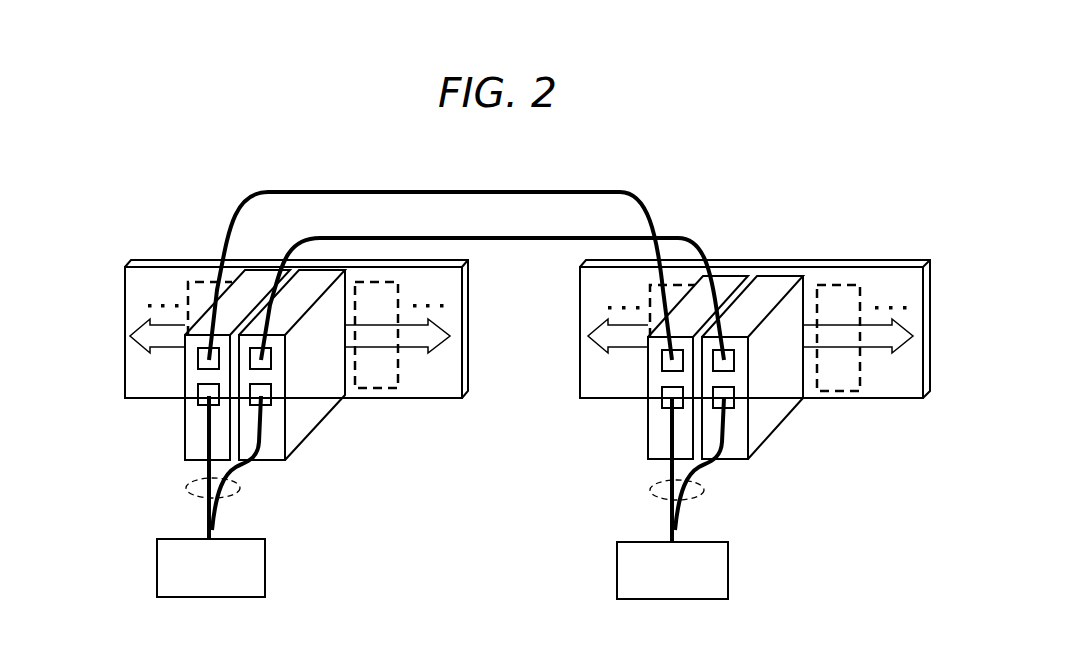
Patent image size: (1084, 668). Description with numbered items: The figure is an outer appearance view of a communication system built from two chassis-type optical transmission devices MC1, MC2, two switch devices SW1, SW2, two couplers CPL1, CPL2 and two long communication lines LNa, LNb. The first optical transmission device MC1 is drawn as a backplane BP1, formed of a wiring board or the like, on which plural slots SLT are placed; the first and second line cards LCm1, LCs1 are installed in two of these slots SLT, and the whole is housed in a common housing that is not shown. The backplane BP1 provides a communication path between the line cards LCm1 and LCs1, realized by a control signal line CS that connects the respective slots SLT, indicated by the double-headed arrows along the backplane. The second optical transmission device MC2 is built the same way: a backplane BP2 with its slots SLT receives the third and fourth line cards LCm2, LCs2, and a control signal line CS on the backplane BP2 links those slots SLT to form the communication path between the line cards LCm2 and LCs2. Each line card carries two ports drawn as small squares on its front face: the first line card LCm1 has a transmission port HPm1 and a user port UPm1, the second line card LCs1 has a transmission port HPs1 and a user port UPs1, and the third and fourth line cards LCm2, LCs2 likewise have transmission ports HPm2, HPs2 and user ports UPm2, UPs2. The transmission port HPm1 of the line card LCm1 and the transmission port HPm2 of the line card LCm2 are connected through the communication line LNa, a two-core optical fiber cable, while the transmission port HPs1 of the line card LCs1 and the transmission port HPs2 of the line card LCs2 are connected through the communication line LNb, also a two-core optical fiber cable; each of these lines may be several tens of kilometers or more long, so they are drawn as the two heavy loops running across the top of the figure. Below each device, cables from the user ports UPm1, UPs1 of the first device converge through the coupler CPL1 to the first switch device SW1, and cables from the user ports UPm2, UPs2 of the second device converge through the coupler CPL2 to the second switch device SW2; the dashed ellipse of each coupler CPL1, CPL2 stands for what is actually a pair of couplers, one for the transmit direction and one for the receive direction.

The first backplane BP1 is at (145, 275).
The second backplane BP2 is at (893, 275).
The slot SLT is at (188, 284).
The control signal line CS is at (425, 348).
The optical transmission device MC1 is at (236, 335).
The optical transmission device MC2 is at (696, 344).
The first line card LCm1 is at (180, 383).
The second line card LCs1 is at (321, 394).
The third line card LCm2 is at (640, 387).
The fourth line card LCs2 is at (781, 399).
The transmission port HPm1 is at (198, 358).
The user port UPm1 is at (198, 396).
The transmission port HPs1 is at (272, 358).
The user port UPs1 is at (272, 398).
The transmission port HPm2 is at (662, 360).
The user port UPm2 is at (662, 398).
The transmission port HPs2 is at (736, 361).
The user port UPs2 is at (735, 398).
The communication line LNa is at (455, 190).
The communication line LNb is at (506, 242).
The coupler CPL1 is at (193, 498).
The coupler CPL2 is at (657, 499).
The first switch device SW1 is at (211, 568).
The second switch device SW2 is at (672, 570).